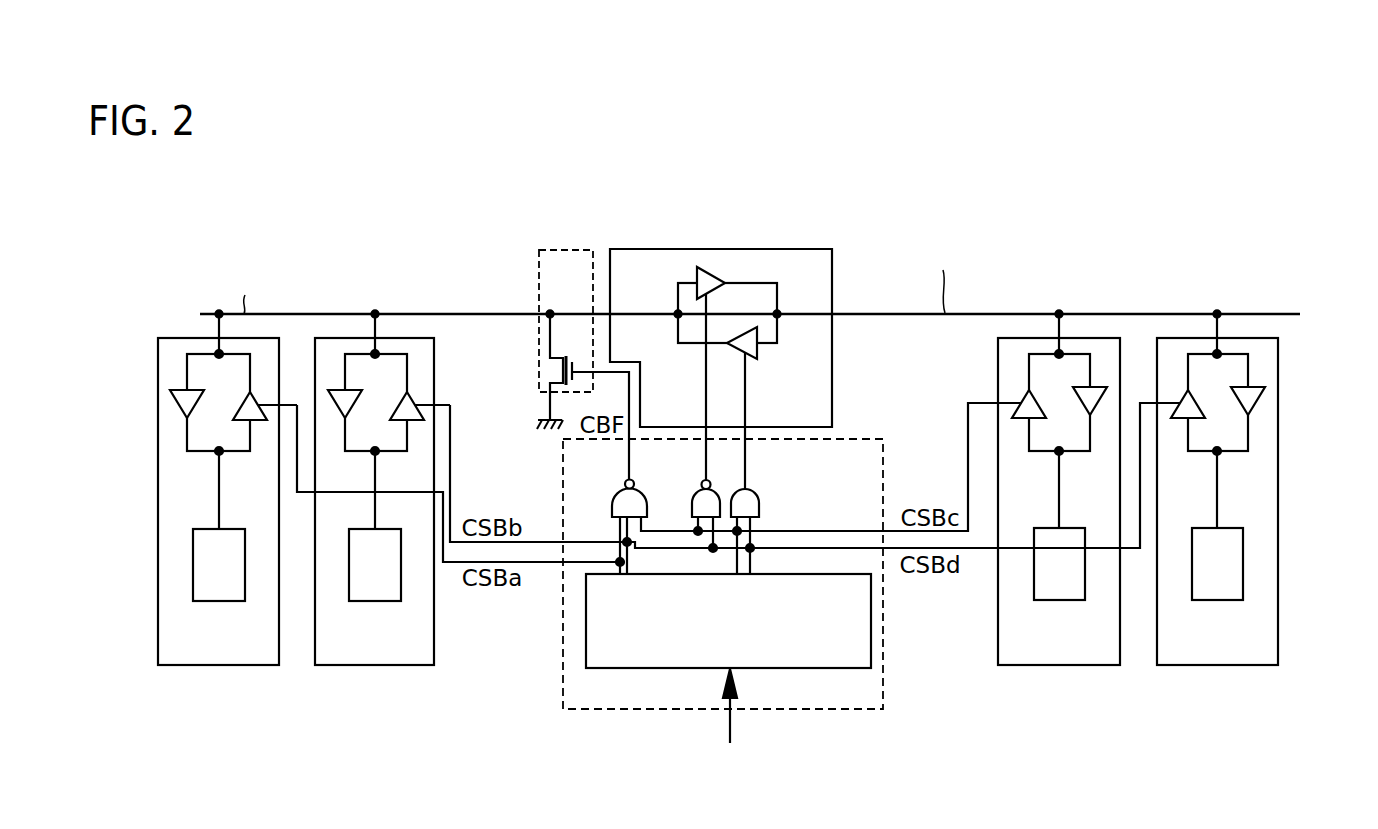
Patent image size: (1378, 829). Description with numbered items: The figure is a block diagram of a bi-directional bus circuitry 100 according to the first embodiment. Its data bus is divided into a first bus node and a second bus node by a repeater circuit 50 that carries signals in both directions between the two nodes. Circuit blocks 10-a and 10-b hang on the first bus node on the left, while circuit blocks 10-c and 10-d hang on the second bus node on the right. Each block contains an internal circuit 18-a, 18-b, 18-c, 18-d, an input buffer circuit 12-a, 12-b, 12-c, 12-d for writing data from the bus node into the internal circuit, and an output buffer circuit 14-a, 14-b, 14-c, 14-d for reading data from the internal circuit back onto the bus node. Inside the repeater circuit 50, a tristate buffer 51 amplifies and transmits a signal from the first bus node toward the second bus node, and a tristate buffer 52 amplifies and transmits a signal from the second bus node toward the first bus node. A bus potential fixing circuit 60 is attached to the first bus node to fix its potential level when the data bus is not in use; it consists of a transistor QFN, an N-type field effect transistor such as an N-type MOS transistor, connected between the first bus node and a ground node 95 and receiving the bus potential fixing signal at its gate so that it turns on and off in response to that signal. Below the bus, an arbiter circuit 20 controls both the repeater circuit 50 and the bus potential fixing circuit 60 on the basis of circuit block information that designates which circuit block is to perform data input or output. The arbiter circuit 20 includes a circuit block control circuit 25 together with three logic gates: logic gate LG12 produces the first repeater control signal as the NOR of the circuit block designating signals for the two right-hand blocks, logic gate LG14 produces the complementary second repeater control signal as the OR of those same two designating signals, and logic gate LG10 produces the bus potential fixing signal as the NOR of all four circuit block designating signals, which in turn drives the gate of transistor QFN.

The bi-directional bus circuitry 100 is at (1185, 186).
The circuit block 10-a is at (191, 519).
The circuit block 10-b is at (379, 499).
The circuit block 10-c is at (1039, 496).
The circuit block 10-d is at (1254, 517).
The input buffer circuit 12-a is at (182, 407).
The input buffer circuit 12-b is at (343, 388).
The input buffer circuit 12-c is at (1022, 402).
The input buffer circuit 12-d is at (1189, 395).
The output buffer circuit 14-a is at (248, 397).
The output buffer circuit 14-b is at (409, 392).
The output buffer circuit 14-c is at (1094, 387).
The output buffer circuit 14-d is at (1257, 400).
The internal circuit 18-a is at (219, 601).
The internal circuit 18-b is at (375, 601).
The internal circuit 18-c is at (1060, 600).
The internal circuit 18-d is at (1217, 600).
The arbiter circuit 20 is at (748, 609).
The circuit block control circuit 25 is at (871, 628).
The repeater circuit 50 is at (721, 337).
The tristate buffer 51 is at (717, 272).
The tristate buffer 52 is at (758, 348).
The bus potential fixing circuit 60 is at (526, 311).
The ground node 95 is at (549, 406).
The transistor QFN is at (551, 370).
The logic gate LG10 is at (617, 497).
The logic gate LG12 is at (694, 497).
The logic gate LG14 is at (760, 500).